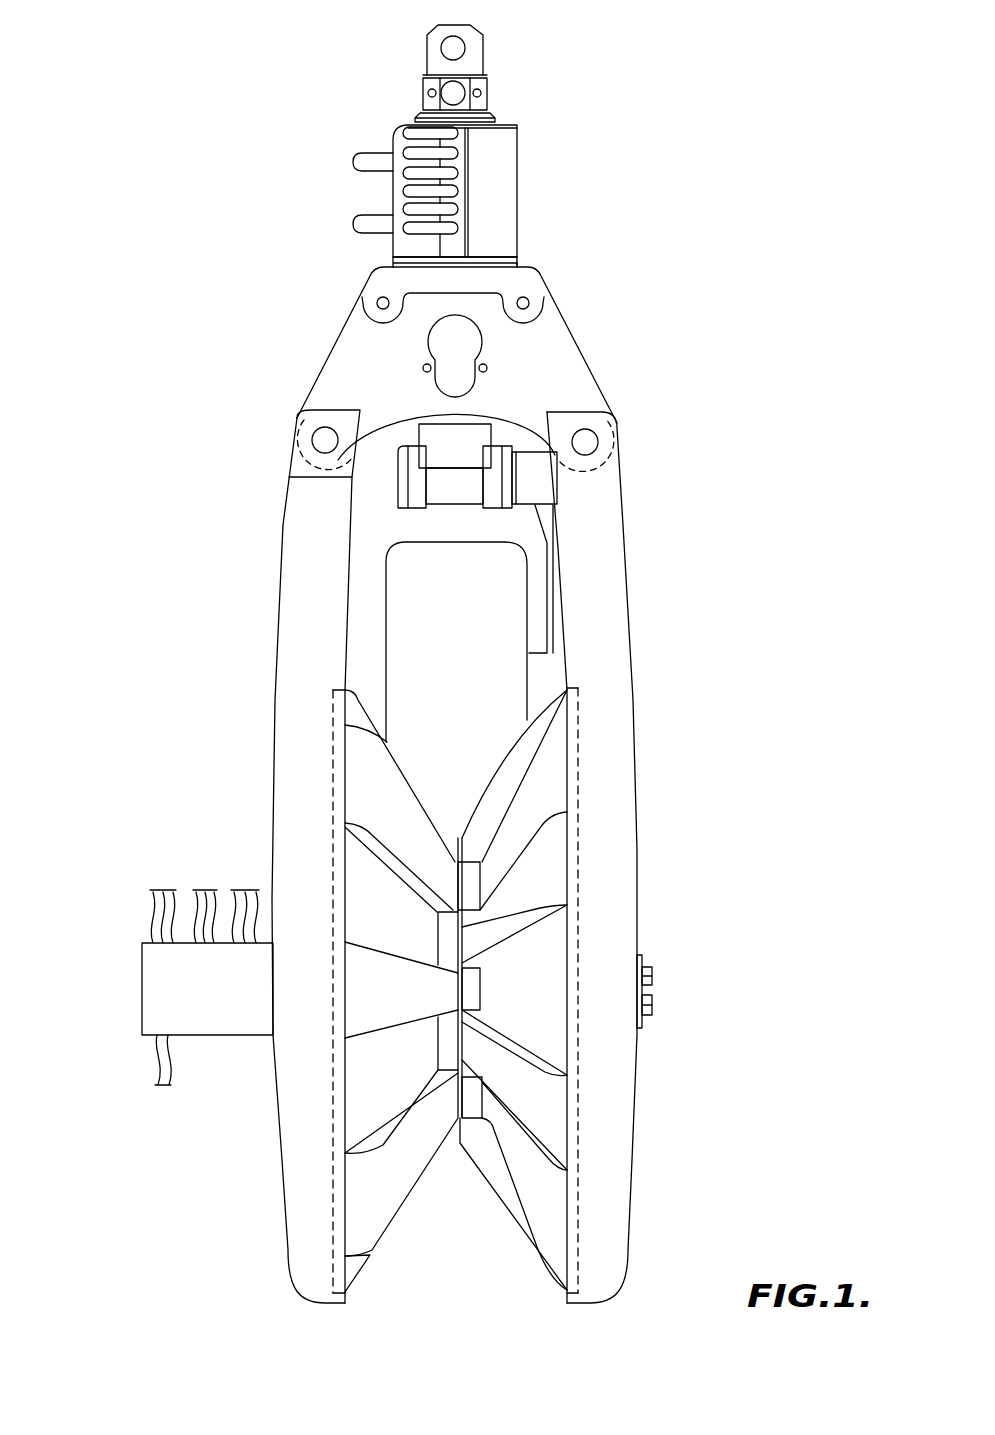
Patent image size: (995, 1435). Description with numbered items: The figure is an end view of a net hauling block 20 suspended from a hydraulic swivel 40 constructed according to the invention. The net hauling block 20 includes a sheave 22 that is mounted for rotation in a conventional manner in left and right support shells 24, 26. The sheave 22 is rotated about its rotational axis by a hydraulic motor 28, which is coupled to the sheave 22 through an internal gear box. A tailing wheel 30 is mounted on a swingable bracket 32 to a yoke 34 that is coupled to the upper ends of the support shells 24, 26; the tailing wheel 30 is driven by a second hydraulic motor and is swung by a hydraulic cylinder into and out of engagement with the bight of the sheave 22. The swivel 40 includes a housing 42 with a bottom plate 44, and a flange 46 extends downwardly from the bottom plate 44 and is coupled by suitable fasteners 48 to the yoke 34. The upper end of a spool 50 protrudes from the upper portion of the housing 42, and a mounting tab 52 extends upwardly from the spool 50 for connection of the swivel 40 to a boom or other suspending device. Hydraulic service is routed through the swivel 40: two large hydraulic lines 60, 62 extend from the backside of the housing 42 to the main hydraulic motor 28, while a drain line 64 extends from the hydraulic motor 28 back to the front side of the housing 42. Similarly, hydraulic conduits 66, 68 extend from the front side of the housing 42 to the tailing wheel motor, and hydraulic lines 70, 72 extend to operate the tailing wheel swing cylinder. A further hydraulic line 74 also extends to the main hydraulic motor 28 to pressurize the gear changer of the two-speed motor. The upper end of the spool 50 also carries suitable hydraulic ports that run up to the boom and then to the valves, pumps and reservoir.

The net hauling block 20 is at (724, 730).
The sheave 22 is at (553, 1095).
The left support shell 24 is at (297, 617).
The right support shell 26 is at (613, 827).
The hydraulic motor 28 is at (157, 997).
The tailing wheel 30 is at (485, 640).
The swingable bracket 32 is at (548, 553).
The yoke 34 is at (555, 370).
The swivel 40 is at (636, 114).
The housing 42 is at (507, 132).
The bottom plate 44 is at (397, 262).
The flange 46 is at (523, 270).
The fasteners 48 is at (377, 303).
The spool 50 is at (477, 107).
The mounting tab 52 is at (430, 47).
The hydraulic line 60 is at (356, 157).
The hydraulic line 62 is at (357, 222).
The drain line 64 is at (402, 133).
The hydraulic conduit 66 is at (452, 153).
The hydraulic conduit 68 is at (457, 230).
The hydraulic line 70 is at (408, 175).
The hydraulic line 72 is at (408, 192).
The hydraulic line 74 is at (455, 208).